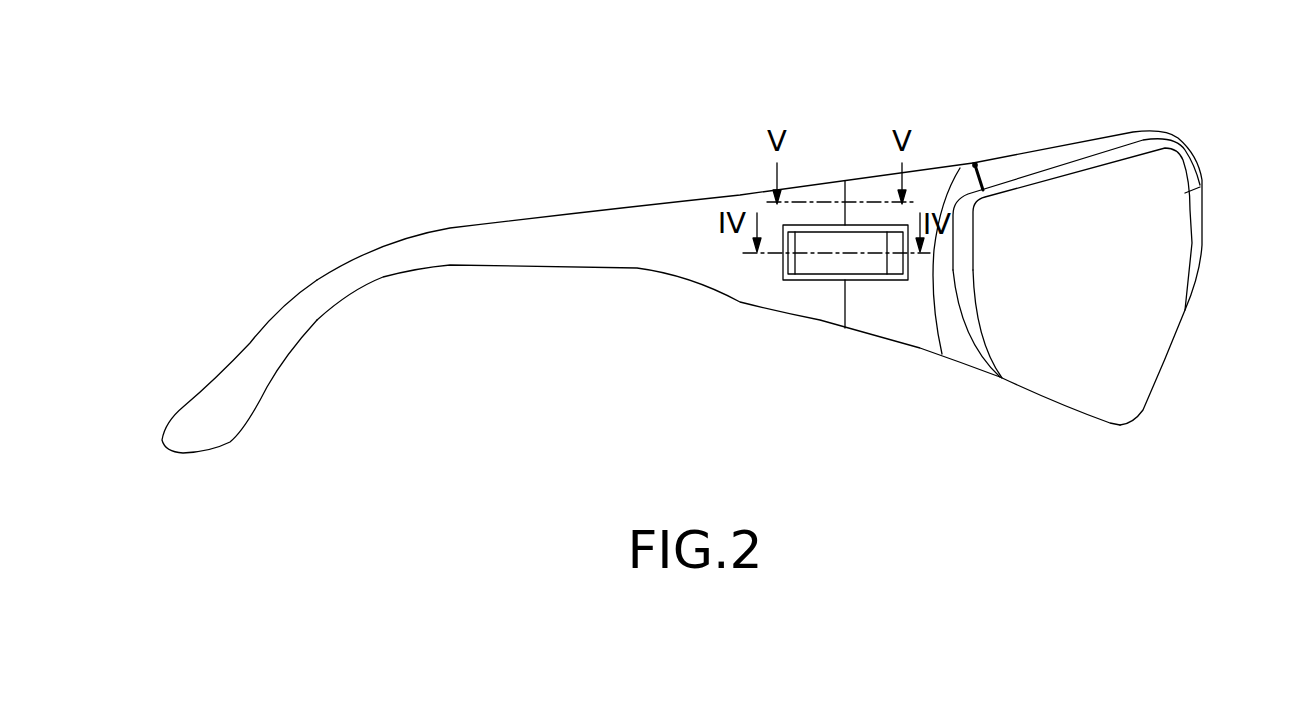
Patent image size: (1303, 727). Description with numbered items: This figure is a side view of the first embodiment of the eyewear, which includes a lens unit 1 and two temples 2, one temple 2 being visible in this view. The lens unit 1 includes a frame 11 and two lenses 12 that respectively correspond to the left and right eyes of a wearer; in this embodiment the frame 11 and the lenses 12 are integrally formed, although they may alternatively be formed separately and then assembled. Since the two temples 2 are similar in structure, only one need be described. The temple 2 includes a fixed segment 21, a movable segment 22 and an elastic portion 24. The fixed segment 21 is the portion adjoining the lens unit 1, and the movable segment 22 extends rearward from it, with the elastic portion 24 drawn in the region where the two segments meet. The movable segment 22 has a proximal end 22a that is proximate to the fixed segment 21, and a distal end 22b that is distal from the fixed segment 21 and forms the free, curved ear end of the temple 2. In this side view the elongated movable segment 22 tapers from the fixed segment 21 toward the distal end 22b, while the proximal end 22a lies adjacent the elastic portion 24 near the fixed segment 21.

The lens unit 1 is at (1133, 127).
The frame 11 is at (1043, 160).
The lens 12 is at (1110, 332).
The temple 2 is at (607, 205).
The fixed segment 21 is at (905, 322).
The movable segment 22 is at (702, 257).
The proximal end 22a is at (845, 308).
The distal end 22b is at (233, 418).
The elastic portion 24 is at (830, 255).